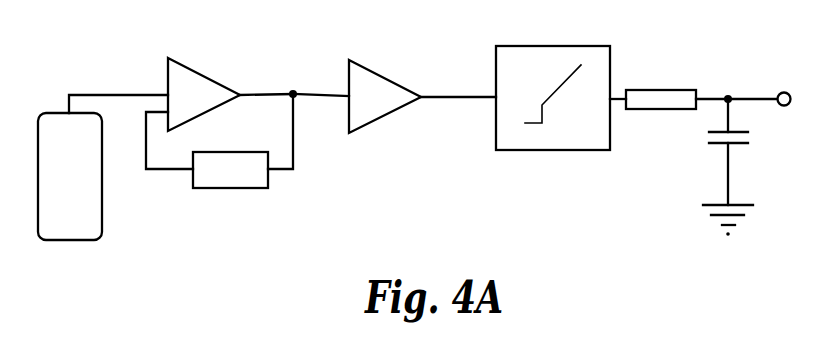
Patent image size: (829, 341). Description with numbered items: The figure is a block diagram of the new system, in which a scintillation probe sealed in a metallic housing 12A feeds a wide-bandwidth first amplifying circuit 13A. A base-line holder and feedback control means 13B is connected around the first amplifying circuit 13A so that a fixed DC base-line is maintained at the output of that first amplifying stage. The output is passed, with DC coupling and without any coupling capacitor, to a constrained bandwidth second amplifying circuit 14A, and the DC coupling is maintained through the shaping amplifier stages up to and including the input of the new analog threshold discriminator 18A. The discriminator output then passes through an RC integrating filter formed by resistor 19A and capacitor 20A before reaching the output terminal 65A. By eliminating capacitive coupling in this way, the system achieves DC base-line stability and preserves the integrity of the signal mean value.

The scintillation probe sealed in metallic housing 12A is at (103, 186).
The wide-bandwidth first amplifying circuit 13A is at (230, 92).
The base-line holder and feedback control means 13B is at (221, 157).
The constrained bandwidth second amplifying circuit 14A is at (394, 95).
The new analog threshold discriminator 18A is at (561, 83).
The RC integrating filter 19A is at (677, 84).
The RC integrating filter 20A is at (715, 165).
The output terminal 65A is at (773, 86).